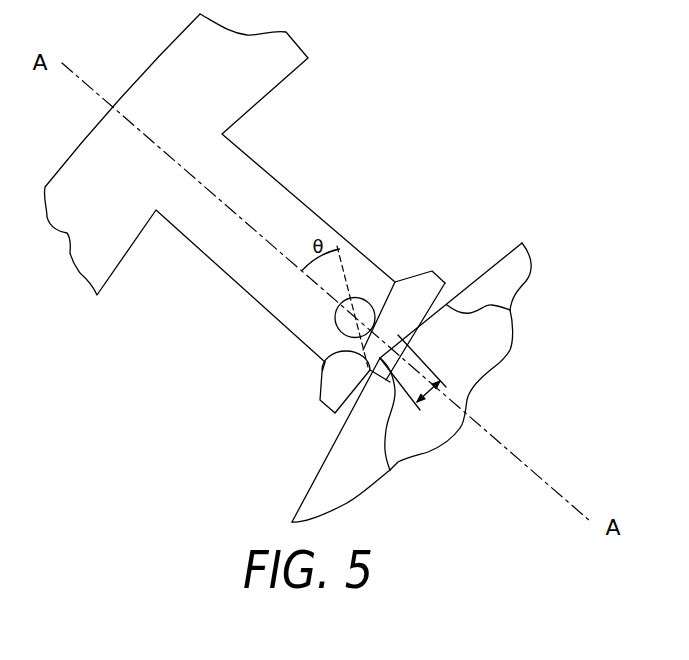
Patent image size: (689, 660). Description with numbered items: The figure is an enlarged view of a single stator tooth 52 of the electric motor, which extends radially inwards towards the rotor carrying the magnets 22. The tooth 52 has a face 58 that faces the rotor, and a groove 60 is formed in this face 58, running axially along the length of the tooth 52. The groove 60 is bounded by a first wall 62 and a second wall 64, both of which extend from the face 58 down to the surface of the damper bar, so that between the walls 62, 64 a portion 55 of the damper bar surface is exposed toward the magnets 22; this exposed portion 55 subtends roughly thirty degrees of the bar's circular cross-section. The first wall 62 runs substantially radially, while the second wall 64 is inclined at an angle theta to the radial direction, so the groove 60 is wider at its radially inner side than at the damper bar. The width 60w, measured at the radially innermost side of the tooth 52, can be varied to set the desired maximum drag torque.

The magnet 22 is at (312, 483).
The stator tooth 52 is at (232, 239).
The exposed portion of the damper bar surface 55 is at (376, 331).
The face 58 is at (511, 304).
The groove 60 is at (390, 470).
The width of the groove 60w is at (423, 398).
The first wall 62 is at (397, 280).
The second wall 64 is at (323, 369).